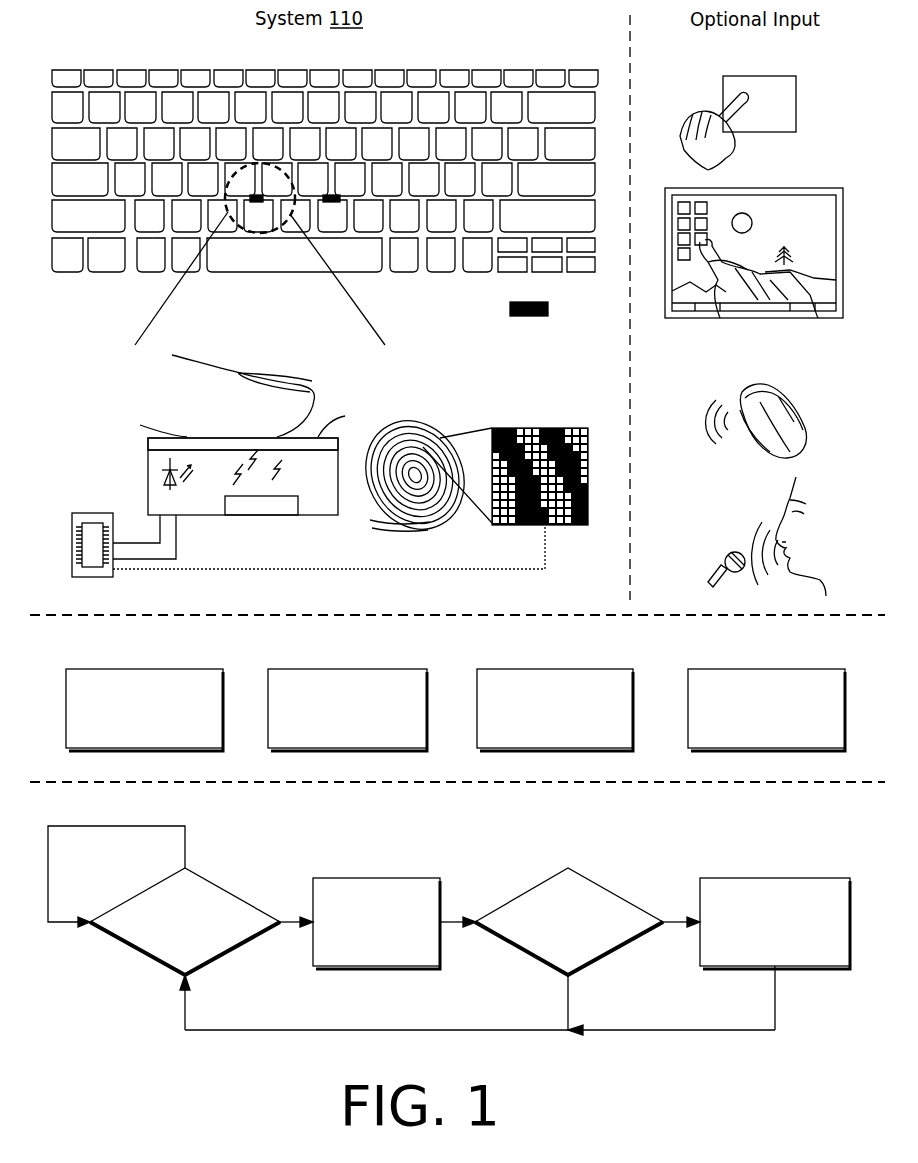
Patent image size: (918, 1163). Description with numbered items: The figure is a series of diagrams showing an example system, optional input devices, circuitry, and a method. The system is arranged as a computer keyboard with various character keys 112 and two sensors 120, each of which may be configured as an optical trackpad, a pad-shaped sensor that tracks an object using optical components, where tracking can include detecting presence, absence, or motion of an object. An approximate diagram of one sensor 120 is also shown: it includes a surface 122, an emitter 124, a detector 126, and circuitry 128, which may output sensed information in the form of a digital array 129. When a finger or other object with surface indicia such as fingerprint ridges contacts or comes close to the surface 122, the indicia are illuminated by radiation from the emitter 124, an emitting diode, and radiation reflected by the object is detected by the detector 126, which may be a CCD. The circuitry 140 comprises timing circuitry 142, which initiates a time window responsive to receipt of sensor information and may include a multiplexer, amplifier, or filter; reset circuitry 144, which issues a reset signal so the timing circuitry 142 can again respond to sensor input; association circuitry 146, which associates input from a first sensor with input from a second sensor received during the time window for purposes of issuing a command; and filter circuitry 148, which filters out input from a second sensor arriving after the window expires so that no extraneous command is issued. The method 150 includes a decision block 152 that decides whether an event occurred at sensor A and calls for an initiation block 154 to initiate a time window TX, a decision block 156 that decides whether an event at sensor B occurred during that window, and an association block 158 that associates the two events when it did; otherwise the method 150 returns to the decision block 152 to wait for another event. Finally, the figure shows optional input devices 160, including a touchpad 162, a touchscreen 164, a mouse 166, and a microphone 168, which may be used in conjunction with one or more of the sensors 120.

The keys 112 is at (172, 55).
The sensors 120 is at (256, 196).
The surface 122 is at (322, 437).
The emitter 124 is at (163, 472).
The detector 126 is at (273, 508).
The circuitry 128 is at (95, 513).
The digital array 129 is at (535, 428).
The circuitry 140 is at (520, 654).
The timing circuitry 142 is at (128, 732).
The reset circuitry 144 is at (330, 732).
The association circuitry 146 is at (538, 740).
The filter circuitry 148 is at (750, 732).
The method 150 is at (512, 818).
The decision block 152 is at (152, 958).
The initiation block 154 is at (359, 960).
The decision block 156 is at (533, 888).
The association block 158 is at (758, 960).
The optional input devices 160 is at (812, 55).
The touchpad 162 is at (787, 127).
The touchscreen 164 is at (815, 230).
The mouse 166 is at (745, 392).
The microphone 168 is at (718, 566).